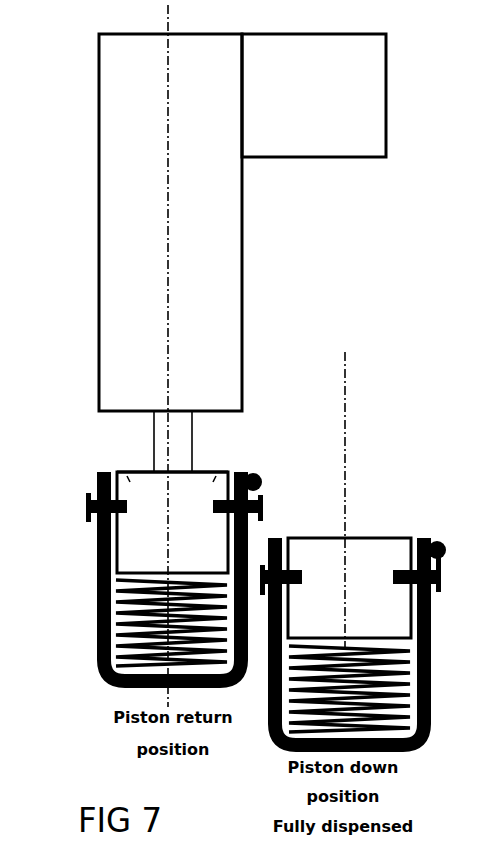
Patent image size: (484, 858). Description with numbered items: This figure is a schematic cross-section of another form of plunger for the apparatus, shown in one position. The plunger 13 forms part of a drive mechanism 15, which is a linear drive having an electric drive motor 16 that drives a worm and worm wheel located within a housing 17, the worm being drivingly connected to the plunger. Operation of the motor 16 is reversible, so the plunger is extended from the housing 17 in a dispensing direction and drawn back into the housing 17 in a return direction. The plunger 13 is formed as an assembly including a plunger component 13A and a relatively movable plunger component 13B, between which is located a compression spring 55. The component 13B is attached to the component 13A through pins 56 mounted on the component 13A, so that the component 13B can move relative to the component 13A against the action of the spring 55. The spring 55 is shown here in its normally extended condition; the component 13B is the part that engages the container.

The drive mechanism 15 is at (279, 253).
The electric drive motor 16 is at (370, 106).
The housing 17 is at (222, 274).
The plunger 13 is at (117, 470).
The plunger component 13A is at (223, 467).
The relatively movable plunger component 13B is at (100, 667).
The compression spring 55 is at (98, 587).
The pins 56 is at (90, 505).